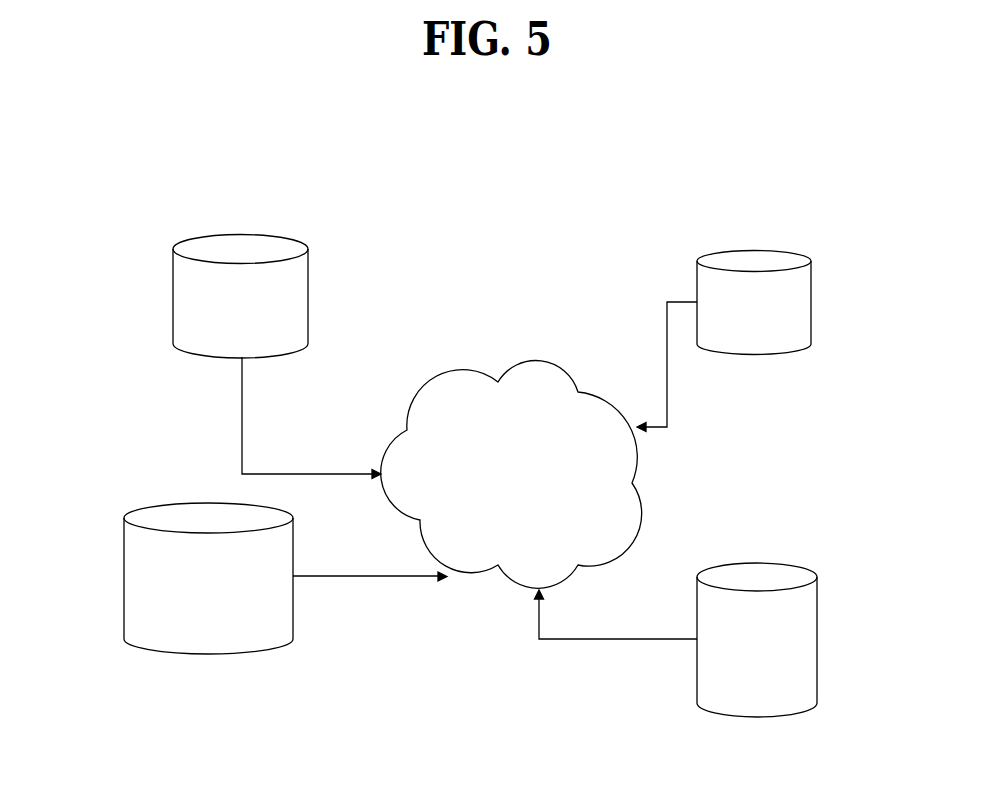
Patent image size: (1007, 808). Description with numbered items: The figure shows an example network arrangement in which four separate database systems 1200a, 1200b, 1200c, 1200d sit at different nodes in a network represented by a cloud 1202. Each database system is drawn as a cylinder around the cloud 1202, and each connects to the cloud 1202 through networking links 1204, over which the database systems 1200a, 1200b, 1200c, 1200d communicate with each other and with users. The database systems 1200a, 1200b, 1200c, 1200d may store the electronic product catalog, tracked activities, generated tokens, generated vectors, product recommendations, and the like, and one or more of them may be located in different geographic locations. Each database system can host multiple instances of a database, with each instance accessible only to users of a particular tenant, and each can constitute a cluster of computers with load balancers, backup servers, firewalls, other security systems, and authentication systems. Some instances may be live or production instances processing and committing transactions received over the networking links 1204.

The database system 1200a is at (170, 297).
The database system 1200b is at (162, 566).
The database system 1200c is at (799, 303).
The database system 1200d is at (822, 640).
The cloud 1202 is at (511, 448).
The networking links 1204 is at (483, 487).